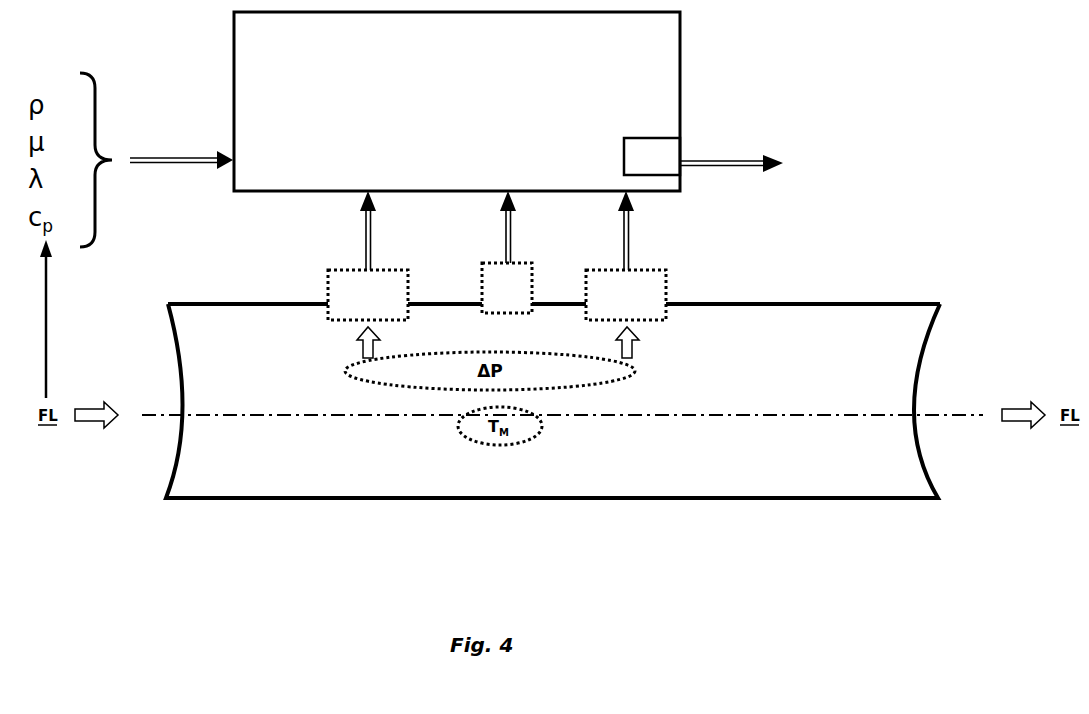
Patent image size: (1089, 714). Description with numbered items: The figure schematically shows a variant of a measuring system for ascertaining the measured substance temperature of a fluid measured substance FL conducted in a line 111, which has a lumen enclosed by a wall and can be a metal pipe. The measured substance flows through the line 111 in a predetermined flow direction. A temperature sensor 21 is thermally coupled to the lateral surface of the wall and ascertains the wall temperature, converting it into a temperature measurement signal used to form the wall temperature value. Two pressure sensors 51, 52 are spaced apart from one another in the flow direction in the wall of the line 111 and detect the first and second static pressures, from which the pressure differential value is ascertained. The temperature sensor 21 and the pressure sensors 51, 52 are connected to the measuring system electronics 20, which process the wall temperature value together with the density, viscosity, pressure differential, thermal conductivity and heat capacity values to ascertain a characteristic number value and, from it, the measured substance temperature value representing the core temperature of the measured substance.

The measuring system electronics 20 is at (467, 111).
The temperature sensor 21 is at (493, 272).
The first pressure sensor 51 is at (335, 280).
The second pressure sensor 52 is at (655, 277).
The line 111 is at (242, 485).